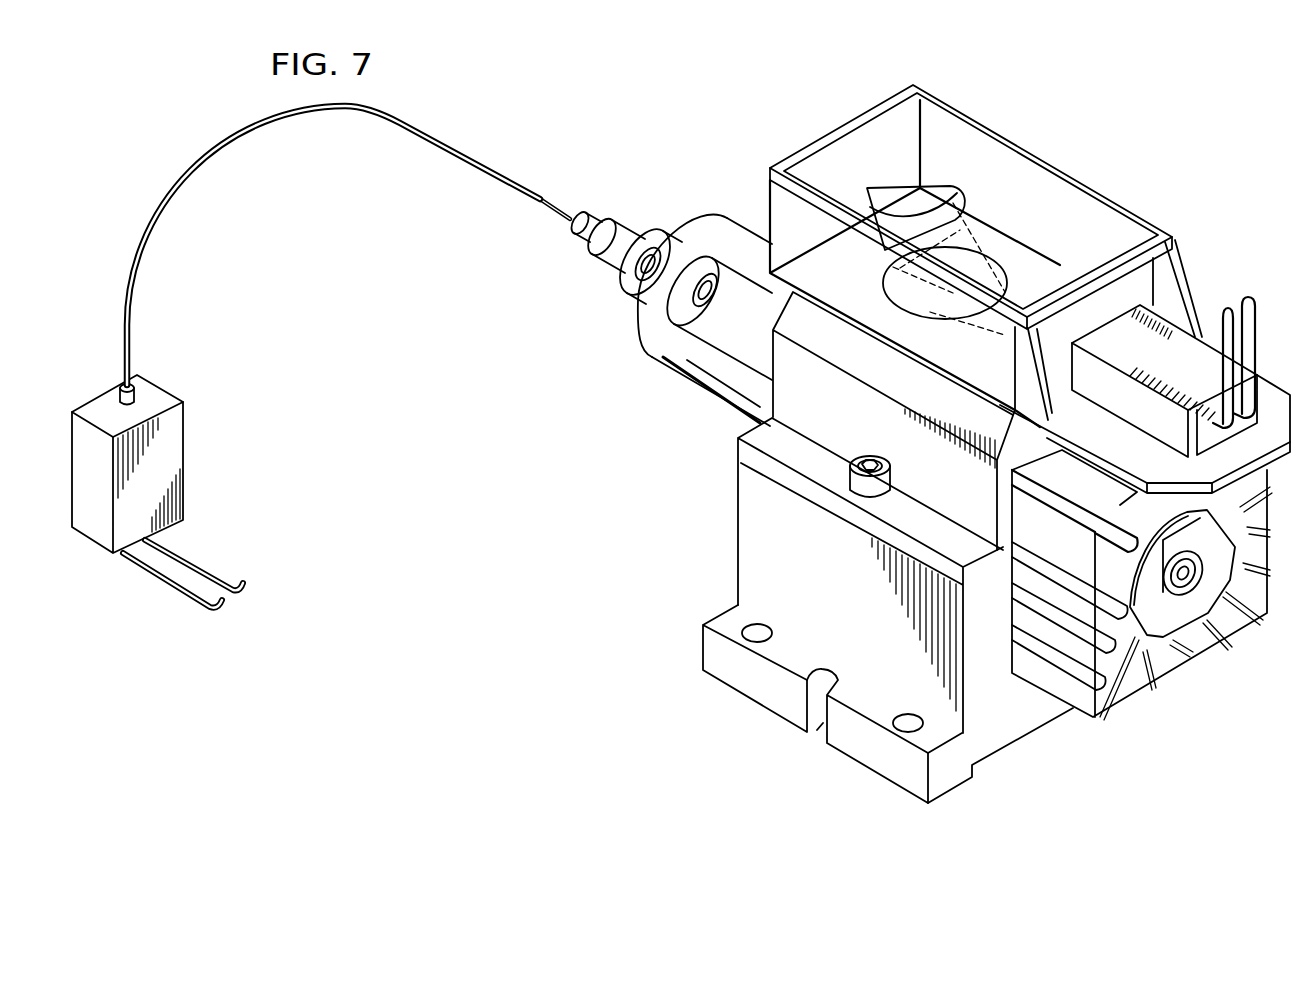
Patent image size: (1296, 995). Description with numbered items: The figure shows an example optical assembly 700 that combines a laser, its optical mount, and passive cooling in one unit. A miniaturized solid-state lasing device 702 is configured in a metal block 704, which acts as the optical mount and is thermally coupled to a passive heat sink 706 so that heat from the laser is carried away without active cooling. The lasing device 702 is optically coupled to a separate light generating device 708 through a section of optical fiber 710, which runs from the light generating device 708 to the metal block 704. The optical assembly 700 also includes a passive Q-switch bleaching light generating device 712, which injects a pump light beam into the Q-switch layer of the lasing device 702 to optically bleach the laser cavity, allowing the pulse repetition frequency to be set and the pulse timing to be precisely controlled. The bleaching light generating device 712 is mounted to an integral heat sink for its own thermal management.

The optical assembly 700 is at (1097, 116).
The miniaturized solid-state lasing device 702 is at (710, 218).
The metal block 704 is at (738, 533).
The passive heat sink 706 is at (1200, 663).
The light generating device 708 is at (183, 457).
The optical fiber 710 is at (223, 140).
The passive Q-switch bleaching light generating device 712 is at (1200, 338).